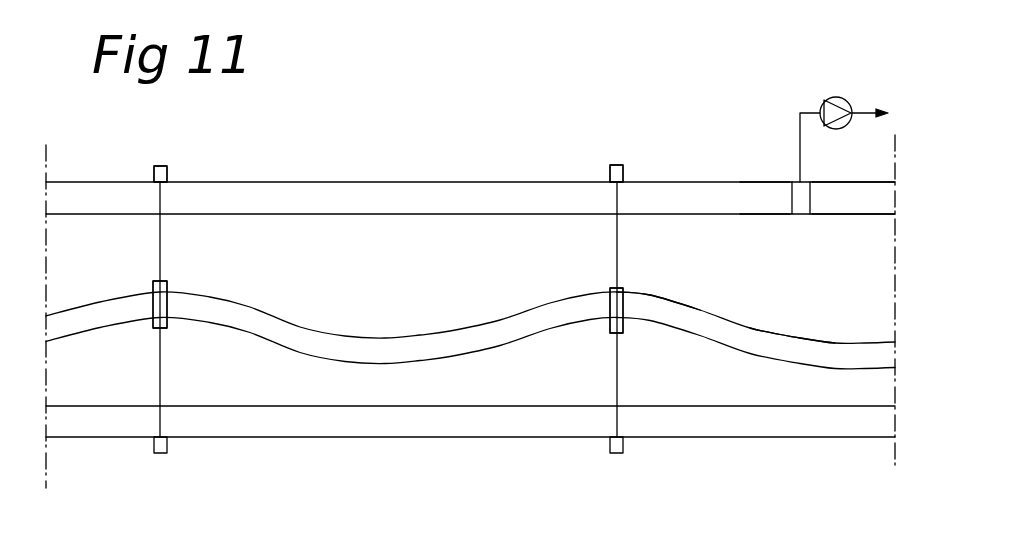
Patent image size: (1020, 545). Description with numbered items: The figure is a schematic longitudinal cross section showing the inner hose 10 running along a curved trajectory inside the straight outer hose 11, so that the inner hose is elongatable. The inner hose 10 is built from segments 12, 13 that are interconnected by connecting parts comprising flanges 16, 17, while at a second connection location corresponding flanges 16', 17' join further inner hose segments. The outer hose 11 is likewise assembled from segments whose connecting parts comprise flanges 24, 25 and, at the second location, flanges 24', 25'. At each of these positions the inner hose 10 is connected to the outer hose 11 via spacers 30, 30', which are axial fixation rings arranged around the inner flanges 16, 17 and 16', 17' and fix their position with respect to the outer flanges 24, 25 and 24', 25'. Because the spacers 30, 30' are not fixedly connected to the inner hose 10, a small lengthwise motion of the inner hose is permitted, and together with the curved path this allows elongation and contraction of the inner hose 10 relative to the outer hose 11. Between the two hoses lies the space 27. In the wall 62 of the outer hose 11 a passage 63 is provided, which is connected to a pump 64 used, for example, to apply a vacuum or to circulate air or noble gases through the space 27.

The inner hose 10 is at (800, 332).
The outer hose 11 is at (258, 188).
The segment of the inner hose 12 is at (667, 317).
The segment of the inner hose 13 is at (386, 353).
The flange 16 is at (583, 291).
The flange 17 is at (583, 291).
The flange 16' is at (200, 288).
The flange 17' is at (200, 288).
The flange 24 is at (601, 152).
The flange 25 is at (601, 152).
The flange 24' is at (133, 152).
The flange 25' is at (133, 152).
The space 27 is at (768, 236).
The spacer 30 is at (592, 317).
The spacer 30' is at (193, 317).
The wall of the outer hose 62 is at (857, 203).
The passage 63 is at (800, 197).
The pump 64 is at (843, 100).